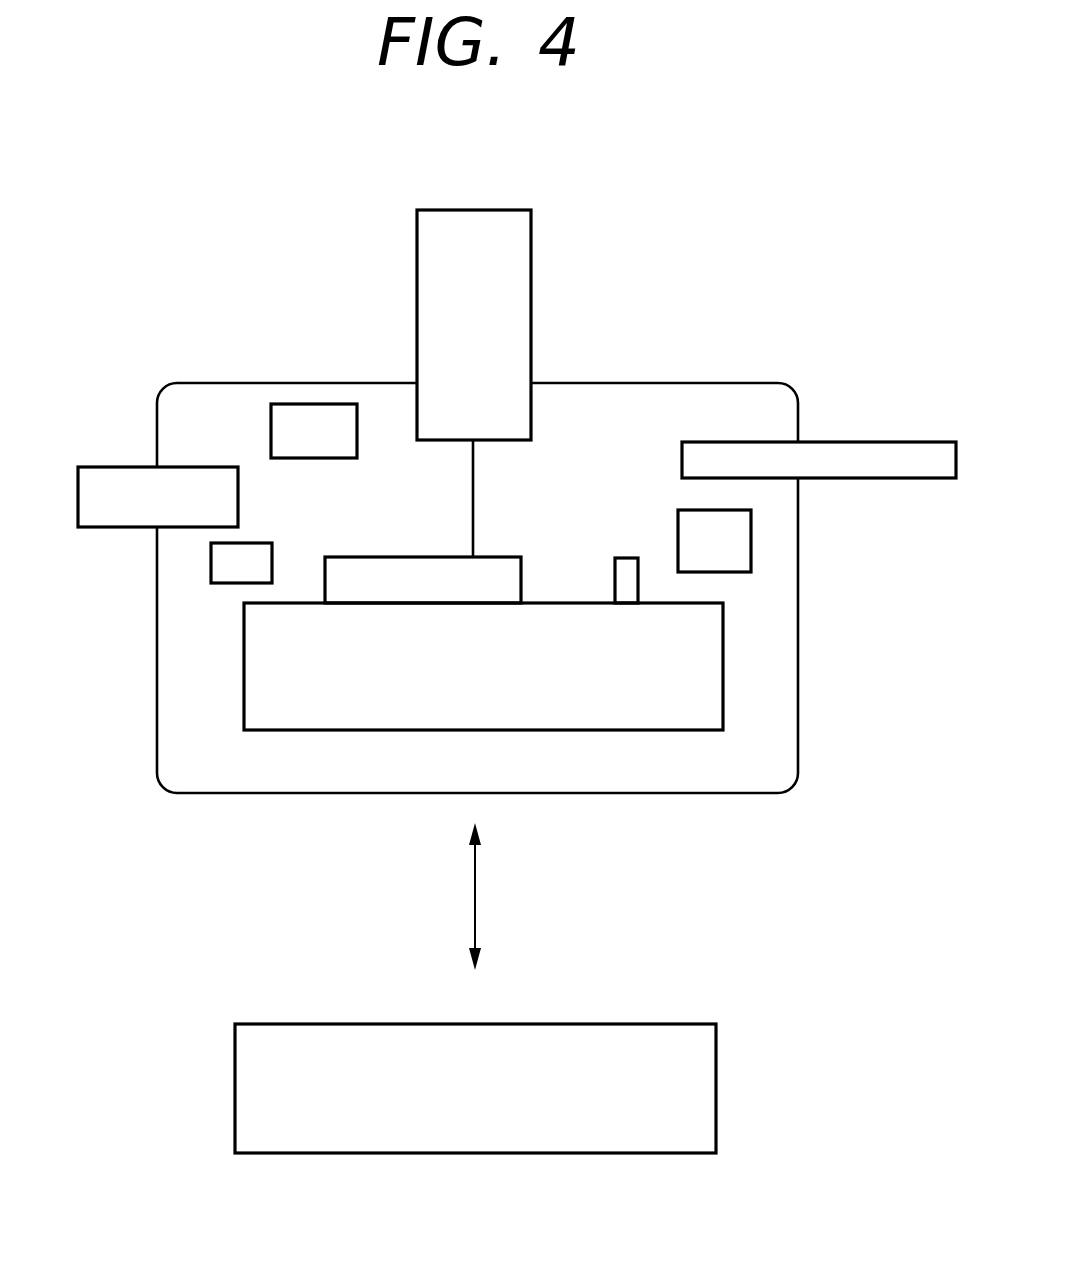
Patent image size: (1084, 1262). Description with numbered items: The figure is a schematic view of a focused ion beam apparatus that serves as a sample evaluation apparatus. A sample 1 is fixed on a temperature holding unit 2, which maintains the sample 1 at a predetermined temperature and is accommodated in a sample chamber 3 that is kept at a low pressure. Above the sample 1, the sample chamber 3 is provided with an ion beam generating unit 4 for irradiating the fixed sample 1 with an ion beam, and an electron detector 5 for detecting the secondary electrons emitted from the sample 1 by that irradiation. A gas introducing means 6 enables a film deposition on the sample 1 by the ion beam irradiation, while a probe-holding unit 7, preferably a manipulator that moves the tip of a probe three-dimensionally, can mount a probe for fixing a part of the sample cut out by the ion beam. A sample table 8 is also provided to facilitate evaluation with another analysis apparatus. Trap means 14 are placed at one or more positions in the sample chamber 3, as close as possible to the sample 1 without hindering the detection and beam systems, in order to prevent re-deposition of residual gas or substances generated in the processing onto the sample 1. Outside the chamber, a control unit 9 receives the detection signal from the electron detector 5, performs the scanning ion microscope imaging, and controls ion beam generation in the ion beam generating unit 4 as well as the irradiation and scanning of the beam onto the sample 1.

The sample 1 is at (385, 568).
The temperature holding unit 2 is at (682, 672).
The sample chamber 3 is at (780, 745).
The ion beam generating unit 4 is at (488, 222).
The electron detector 5 is at (310, 412).
The gas introducing means 6 is at (104, 480).
The probe-holding unit 7 is at (870, 452).
The sample table 8 is at (683, 583).
The control unit 9 is at (700, 1072).
The trap means 14 is at (222, 565).